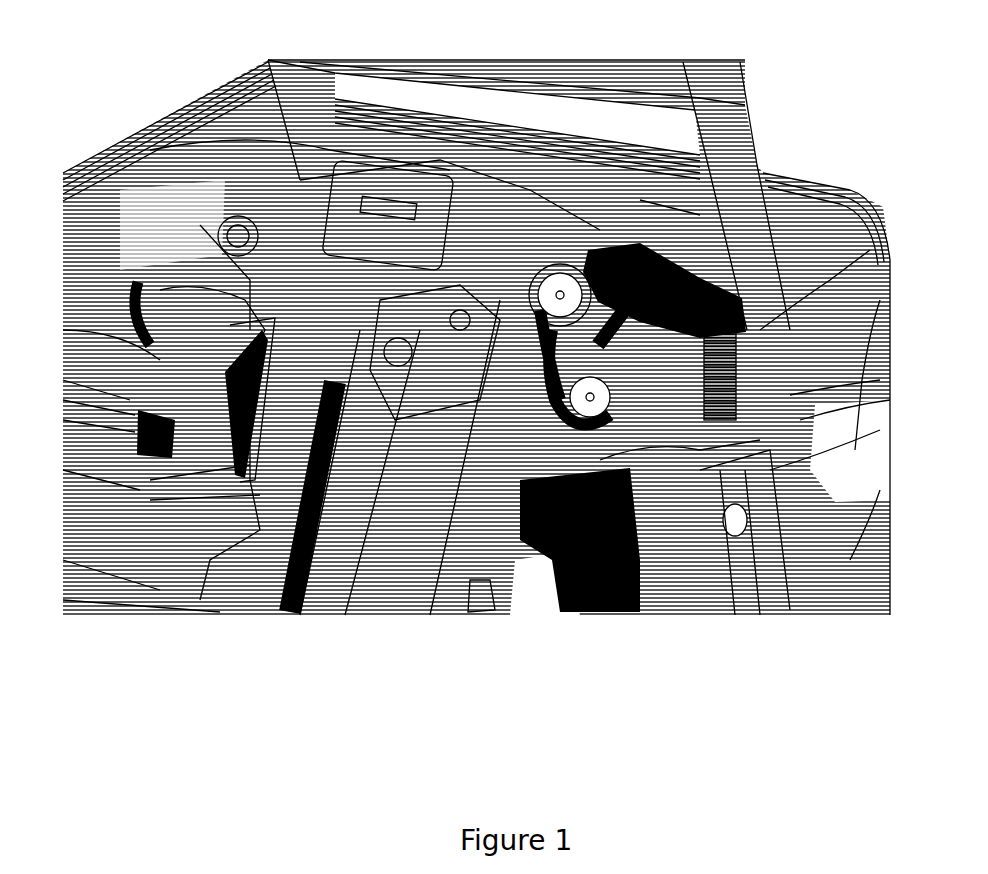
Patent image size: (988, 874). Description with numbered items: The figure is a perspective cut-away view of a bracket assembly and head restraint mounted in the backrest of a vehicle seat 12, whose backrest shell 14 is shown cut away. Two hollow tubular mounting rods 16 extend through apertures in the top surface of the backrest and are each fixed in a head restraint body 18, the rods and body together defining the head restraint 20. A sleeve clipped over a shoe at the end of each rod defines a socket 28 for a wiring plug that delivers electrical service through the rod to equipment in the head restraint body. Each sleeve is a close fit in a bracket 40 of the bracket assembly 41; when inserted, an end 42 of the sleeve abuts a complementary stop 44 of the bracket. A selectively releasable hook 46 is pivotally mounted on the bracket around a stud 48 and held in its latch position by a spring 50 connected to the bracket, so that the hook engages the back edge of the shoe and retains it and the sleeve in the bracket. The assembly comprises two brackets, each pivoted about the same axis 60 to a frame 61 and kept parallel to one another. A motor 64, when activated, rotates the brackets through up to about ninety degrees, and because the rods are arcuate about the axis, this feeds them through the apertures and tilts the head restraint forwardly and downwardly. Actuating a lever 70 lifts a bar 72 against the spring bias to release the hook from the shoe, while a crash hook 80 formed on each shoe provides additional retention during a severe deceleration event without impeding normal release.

The vehicle seat 12 is at (860, 192).
The backrest shell 14 is at (878, 330).
The hollow tubular mounting rod 16 is at (266, 62).
The head restraint body 18 is at (455, 60).
The head restraint 20 is at (765, 63).
The socket 28 is at (136, 432).
The bracket 40 is at (145, 345).
The bracket assembly 41 is at (425, 396).
The end of the sleeve 42 is at (560, 590).
The stop 44 is at (150, 490).
The hook 46 is at (640, 352).
The stud 48 is at (612, 405).
The spring 50 is at (840, 395).
The axis 60 is at (240, 236).
The frame 61 is at (305, 340).
The motor 64 is at (395, 457).
The lever 70 is at (366, 203).
The bar 72 is at (762, 325).
The crash hook 80 is at (140, 445).